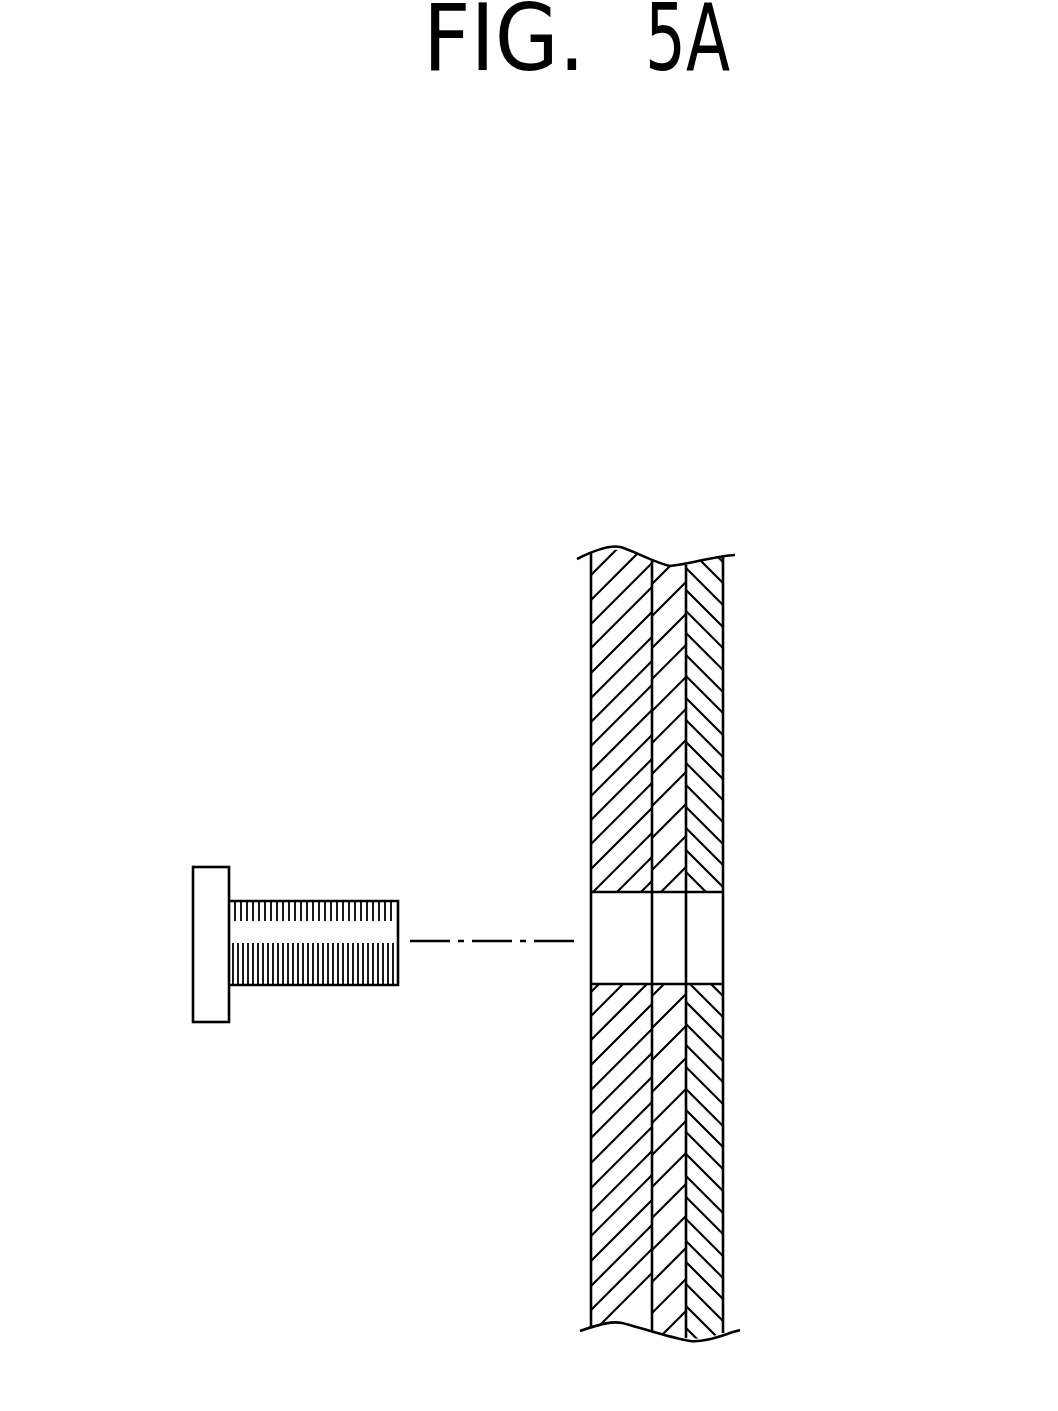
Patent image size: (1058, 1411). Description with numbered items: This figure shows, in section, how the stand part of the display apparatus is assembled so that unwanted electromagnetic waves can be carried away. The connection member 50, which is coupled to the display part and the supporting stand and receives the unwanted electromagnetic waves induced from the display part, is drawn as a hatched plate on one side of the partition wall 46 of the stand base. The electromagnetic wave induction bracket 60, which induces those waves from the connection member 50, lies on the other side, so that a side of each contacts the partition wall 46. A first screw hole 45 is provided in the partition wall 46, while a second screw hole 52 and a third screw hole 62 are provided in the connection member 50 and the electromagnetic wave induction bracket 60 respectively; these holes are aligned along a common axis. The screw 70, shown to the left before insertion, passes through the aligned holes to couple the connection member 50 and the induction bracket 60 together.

The connection member 50 is at (578, 701).
The second screw hole 52 is at (621, 893).
The electromagnetic wave induction bracket 60 is at (758, 951).
The third screw hole 62 is at (707, 893).
The first screw hole 45 is at (672, 982).
The partition wall 46 is at (682, 1164).
The screw 70 is at (193, 937).